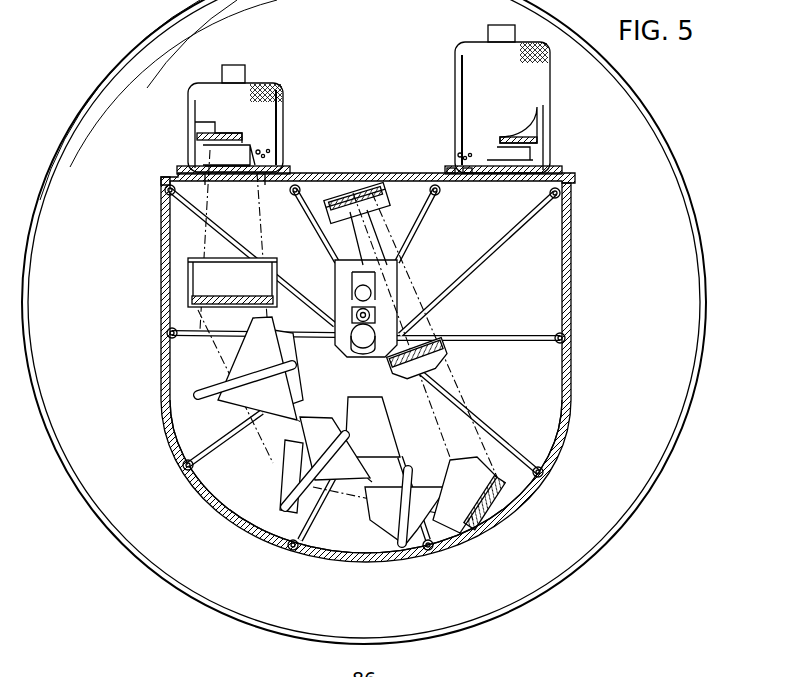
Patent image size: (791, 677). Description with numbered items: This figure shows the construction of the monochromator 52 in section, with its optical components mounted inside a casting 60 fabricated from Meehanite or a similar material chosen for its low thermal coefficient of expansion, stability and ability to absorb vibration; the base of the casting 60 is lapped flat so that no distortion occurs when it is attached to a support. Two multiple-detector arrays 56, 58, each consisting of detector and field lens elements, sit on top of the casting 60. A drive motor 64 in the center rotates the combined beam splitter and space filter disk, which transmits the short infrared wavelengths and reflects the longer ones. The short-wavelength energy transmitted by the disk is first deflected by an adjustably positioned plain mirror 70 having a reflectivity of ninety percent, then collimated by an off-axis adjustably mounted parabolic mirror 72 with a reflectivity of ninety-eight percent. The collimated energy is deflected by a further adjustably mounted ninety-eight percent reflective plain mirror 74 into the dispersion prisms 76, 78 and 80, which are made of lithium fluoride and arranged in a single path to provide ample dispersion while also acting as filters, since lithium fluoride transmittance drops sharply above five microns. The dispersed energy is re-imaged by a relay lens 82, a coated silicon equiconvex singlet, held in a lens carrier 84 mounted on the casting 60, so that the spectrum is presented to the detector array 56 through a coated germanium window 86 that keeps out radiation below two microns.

The monochromator 52 is at (586, 270).
The multiple-detector array 56 is at (182, 146).
The multiple-detector array 58 is at (556, 150).
The casting 60 is at (571, 388).
The drive motor 64 is at (366, 323).
The plain mirror 70 is at (396, 259).
The parabolic mirror 72 is at (353, 189).
The plain mirror 74 is at (491, 478).
The dispersion prism 76 is at (388, 510).
The dispersion prism 78 is at (306, 462).
The dispersion prism 80 is at (243, 369).
The relay lens 82 is at (235, 298).
The lens carrier 84 is at (189, 267).
The germanium window 86 is at (234, 178).